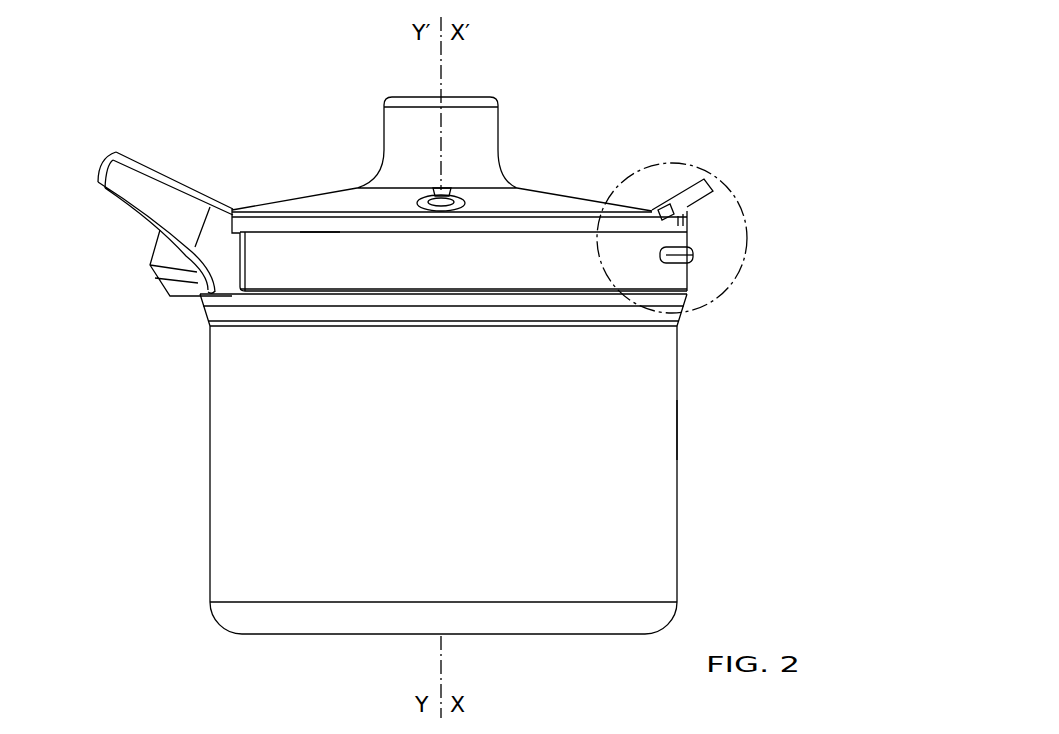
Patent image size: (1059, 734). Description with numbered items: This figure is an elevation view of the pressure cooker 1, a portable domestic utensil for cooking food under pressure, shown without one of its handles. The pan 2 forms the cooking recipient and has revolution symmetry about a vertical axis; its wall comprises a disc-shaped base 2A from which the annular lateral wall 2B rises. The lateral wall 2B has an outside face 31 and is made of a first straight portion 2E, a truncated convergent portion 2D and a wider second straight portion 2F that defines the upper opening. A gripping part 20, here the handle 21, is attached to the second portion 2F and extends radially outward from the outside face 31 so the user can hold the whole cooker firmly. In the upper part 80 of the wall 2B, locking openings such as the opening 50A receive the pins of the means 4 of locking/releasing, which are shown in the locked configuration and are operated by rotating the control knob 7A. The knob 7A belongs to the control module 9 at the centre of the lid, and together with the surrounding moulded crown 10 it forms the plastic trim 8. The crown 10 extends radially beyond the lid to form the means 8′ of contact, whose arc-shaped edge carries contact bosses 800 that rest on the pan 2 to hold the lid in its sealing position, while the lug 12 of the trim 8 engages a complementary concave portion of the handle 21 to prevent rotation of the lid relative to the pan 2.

The pressure cooker 1 is at (565, 131).
The pan 2 is at (646, 511).
The base 2A is at (532, 636).
The lateral wall 2B is at (248, 484).
The convergent portion 2D is at (202, 313).
The first straight portion 2E is at (210, 440).
The second straight portion 2F is at (563, 250).
The means of locking/releasing 4 is at (673, 275).
The control knob 7A is at (402, 134).
The trim 8 is at (328, 190).
The means of contact 8′ is at (325, 222).
The control module 9 is at (487, 143).
The crown 10 is at (259, 232).
The lug 12 is at (675, 202).
The gripping part 20 is at (118, 220).
The handle 21 is at (114, 174).
The outside face 31 is at (652, 428).
The locking opening 50A is at (673, 250).
The upper part 80 is at (753, 228).
The contact bosses 800 is at (259, 235).